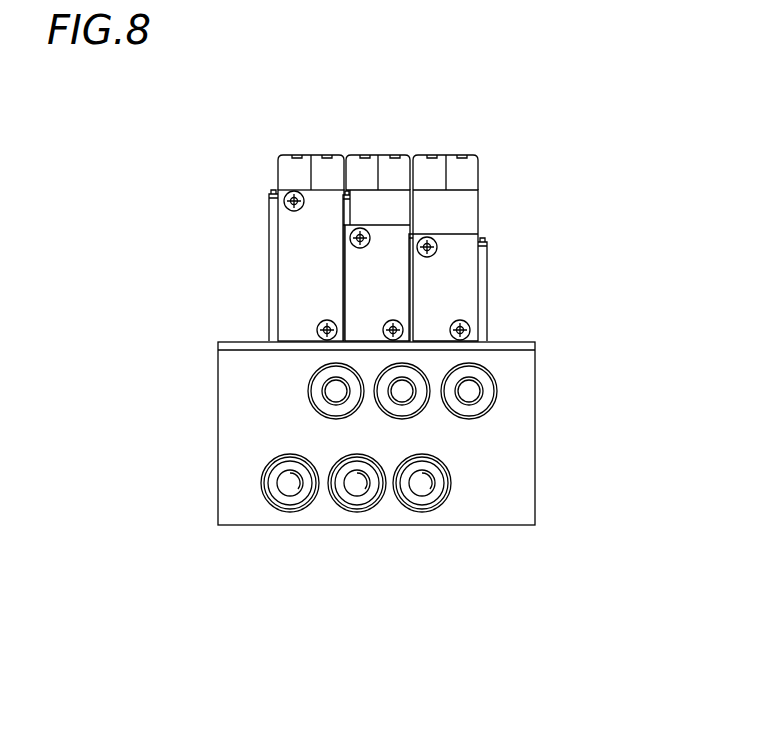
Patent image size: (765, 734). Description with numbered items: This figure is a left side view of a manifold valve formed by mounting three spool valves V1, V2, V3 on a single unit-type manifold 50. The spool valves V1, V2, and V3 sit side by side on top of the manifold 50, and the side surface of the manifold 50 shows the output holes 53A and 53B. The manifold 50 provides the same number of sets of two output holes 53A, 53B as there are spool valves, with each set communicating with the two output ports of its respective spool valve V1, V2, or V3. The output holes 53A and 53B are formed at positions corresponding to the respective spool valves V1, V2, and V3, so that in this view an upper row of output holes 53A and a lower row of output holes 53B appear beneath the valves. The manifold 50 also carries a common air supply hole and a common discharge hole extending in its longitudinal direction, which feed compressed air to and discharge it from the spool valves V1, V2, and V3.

The manifold 50 is at (510, 372).
The output hole 53A is at (320, 391).
The output hole 53B is at (288, 500).
The spool valve V1 is at (450, 83).
The spool valve V2 is at (375, 83).
The spool valve V3 is at (313, 83).